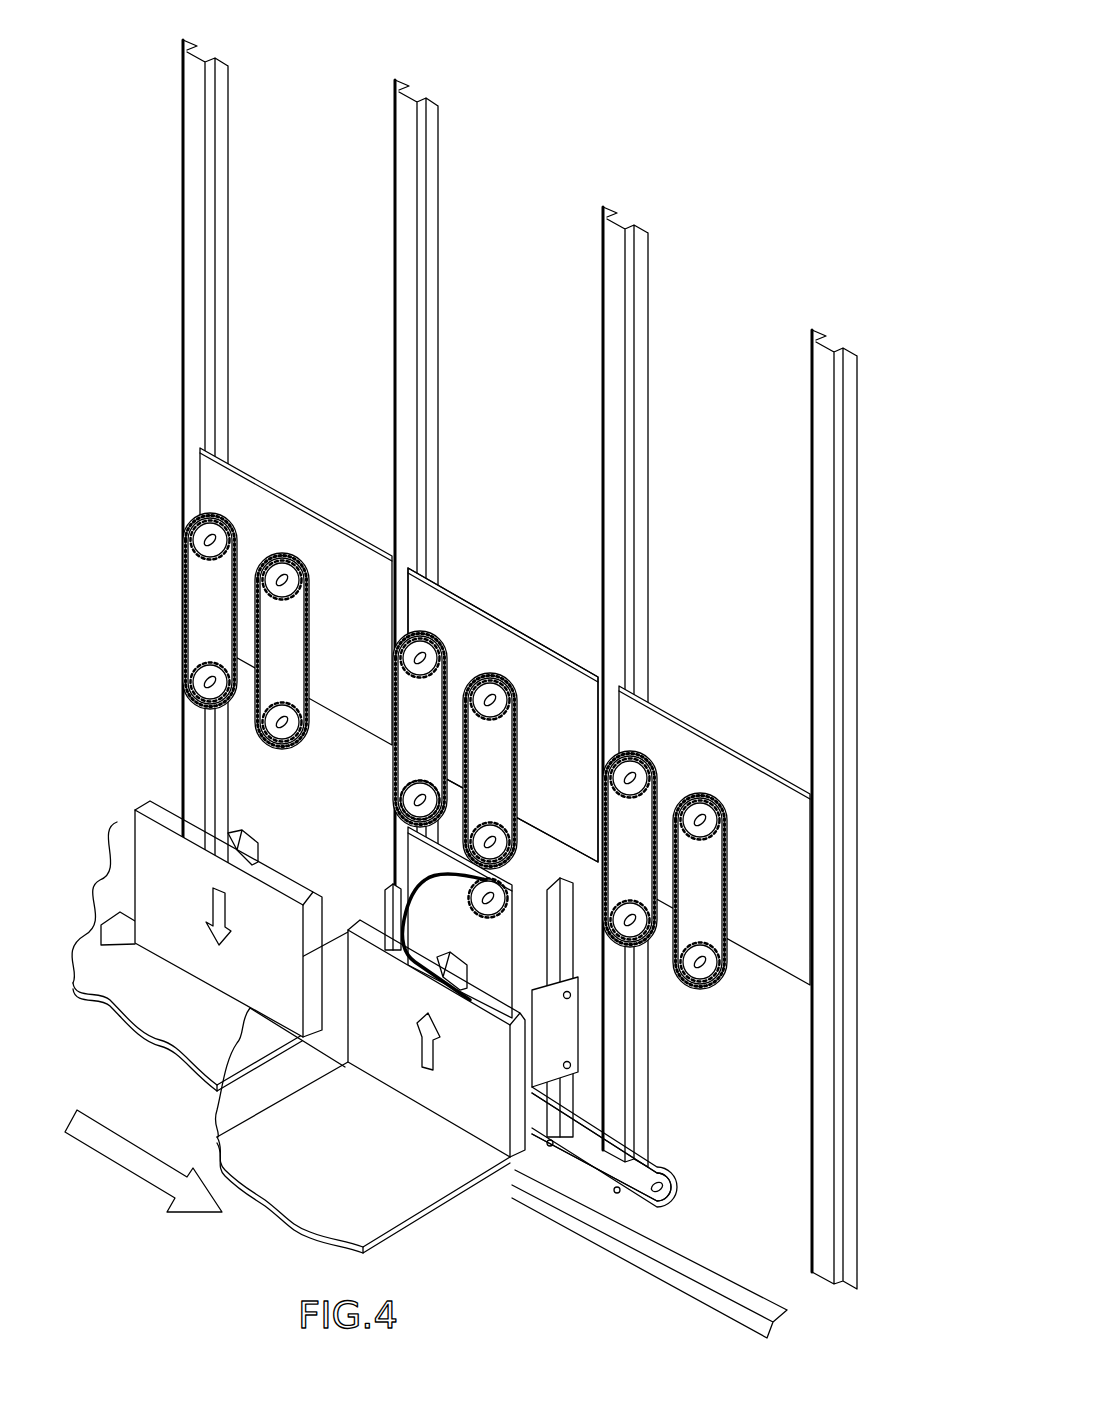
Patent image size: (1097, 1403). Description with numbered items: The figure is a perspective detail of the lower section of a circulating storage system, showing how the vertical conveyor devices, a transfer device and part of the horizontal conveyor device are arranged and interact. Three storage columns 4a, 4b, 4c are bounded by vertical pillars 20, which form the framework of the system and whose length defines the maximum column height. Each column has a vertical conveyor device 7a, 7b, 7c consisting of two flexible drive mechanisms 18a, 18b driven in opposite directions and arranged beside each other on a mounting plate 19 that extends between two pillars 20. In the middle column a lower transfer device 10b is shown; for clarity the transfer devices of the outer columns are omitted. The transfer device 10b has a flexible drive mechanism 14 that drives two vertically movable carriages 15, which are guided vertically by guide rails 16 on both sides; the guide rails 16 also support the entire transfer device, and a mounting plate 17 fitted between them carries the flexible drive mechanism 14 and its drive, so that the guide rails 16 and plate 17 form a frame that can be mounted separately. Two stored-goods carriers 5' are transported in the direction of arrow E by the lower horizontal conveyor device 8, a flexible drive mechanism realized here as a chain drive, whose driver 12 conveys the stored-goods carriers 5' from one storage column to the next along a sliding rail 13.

The storage column 4a is at (313, 98).
The storage column 4b is at (518, 222).
The storage column 4c is at (730, 340).
The vertical pillar 20 is at (414, 450).
The vertical conveyor device 7a is at (249, 531).
The vertical conveyor device 7b is at (458, 653).
The vertical conveyor device 7c is at (671, 765).
The mounting plate 19 is at (446, 617).
The flexible drive mechanism 18a is at (517, 755).
The flexible drive mechanism 18b is at (392, 700).
The lower transfer device 10b is at (432, 869).
The flexible drive mechanism 14 is at (510, 915).
The mounting plate 17 is at (543, 942).
The carriage 15 is at (381, 910).
The guide rail 16 is at (403, 800).
The lower horizontal conveyor device 8 is at (650, 1152).
The driver 12 is at (623, 1193).
The sliding rail 13 is at (663, 1270).
The stored-goods carrier 5' is at (294, 1027).
The direction of the arrow E is at (118, 1155).